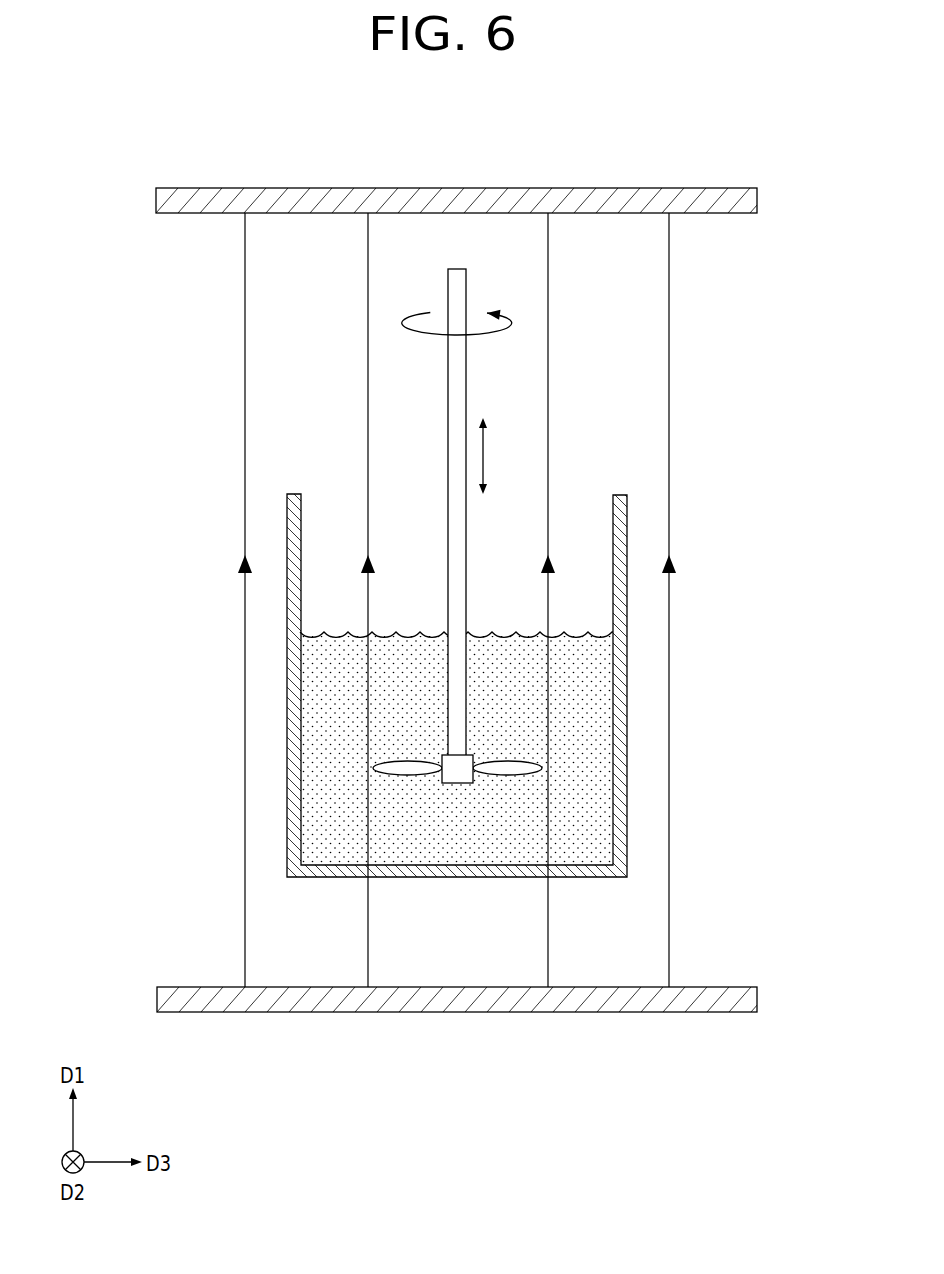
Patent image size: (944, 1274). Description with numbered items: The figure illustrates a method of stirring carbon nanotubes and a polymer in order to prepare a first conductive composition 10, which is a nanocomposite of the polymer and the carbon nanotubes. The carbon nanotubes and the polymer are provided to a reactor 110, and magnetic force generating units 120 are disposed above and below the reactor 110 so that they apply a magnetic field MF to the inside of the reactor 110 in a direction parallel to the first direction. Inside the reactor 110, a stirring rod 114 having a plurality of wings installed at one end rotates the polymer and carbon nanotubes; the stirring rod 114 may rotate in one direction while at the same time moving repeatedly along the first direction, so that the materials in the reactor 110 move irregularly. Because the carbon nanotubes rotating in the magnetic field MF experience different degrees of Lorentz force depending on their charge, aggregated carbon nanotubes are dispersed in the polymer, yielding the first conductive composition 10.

The first conductive composition 10 is at (445, 846).
The reactor 110 is at (488, 872).
The stirring rod 114 is at (458, 278).
The magnetic force generating units 120 is at (745, 198).
The magnetic field MF is at (669, 388).